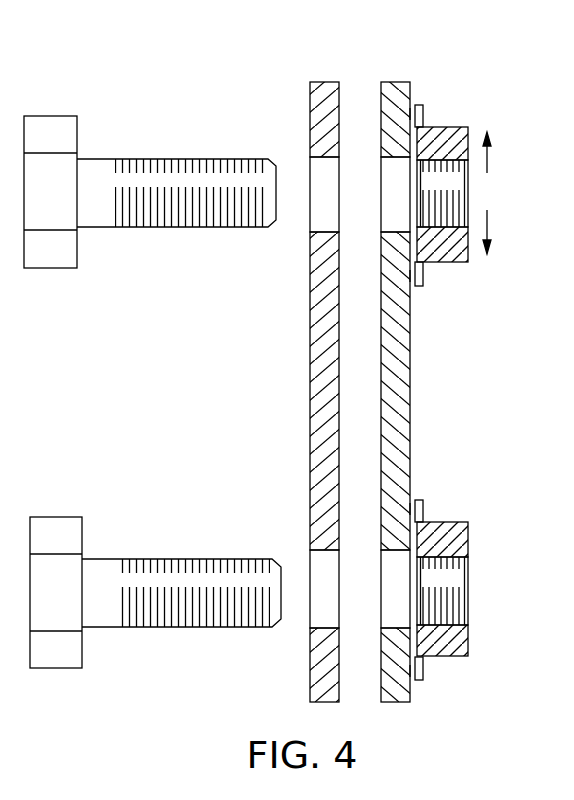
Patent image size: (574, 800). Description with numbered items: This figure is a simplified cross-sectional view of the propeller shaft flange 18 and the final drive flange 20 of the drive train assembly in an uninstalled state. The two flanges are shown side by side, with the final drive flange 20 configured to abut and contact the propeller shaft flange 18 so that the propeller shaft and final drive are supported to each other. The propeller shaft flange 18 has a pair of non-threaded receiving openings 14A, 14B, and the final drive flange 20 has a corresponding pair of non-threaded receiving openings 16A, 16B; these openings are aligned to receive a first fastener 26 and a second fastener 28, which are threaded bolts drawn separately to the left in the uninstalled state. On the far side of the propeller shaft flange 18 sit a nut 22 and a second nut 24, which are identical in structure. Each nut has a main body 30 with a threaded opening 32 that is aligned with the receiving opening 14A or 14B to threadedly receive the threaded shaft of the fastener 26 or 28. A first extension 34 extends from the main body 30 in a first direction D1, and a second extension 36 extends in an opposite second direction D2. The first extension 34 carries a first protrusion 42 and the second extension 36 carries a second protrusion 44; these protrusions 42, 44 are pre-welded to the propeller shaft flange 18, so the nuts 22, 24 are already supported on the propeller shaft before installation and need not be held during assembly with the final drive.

The receiving opening 14A is at (401, 157).
The receiving opening 14B is at (401, 550).
The receiving opening 16A is at (311, 167).
The receiving opening 16B is at (311, 562).
The propeller shaft flange 18 is at (396, 82).
The final drive flange 20 is at (326, 82).
The nut 22 is at (457, 120).
The second nut 24 is at (457, 515).
The first fastener 26 is at (69, 268).
The second fastener 28 is at (68, 668).
The main body 30 is at (441, 263).
The threaded opening 32 is at (441, 226).
The first extension 34 is at (423, 111).
The second extension 36 is at (423, 276).
The first protrusion 42 is at (412, 117).
The second protrusion 44 is at (412, 276).
The first direction D1 is at (488, 158).
The second direction D2 is at (488, 226).